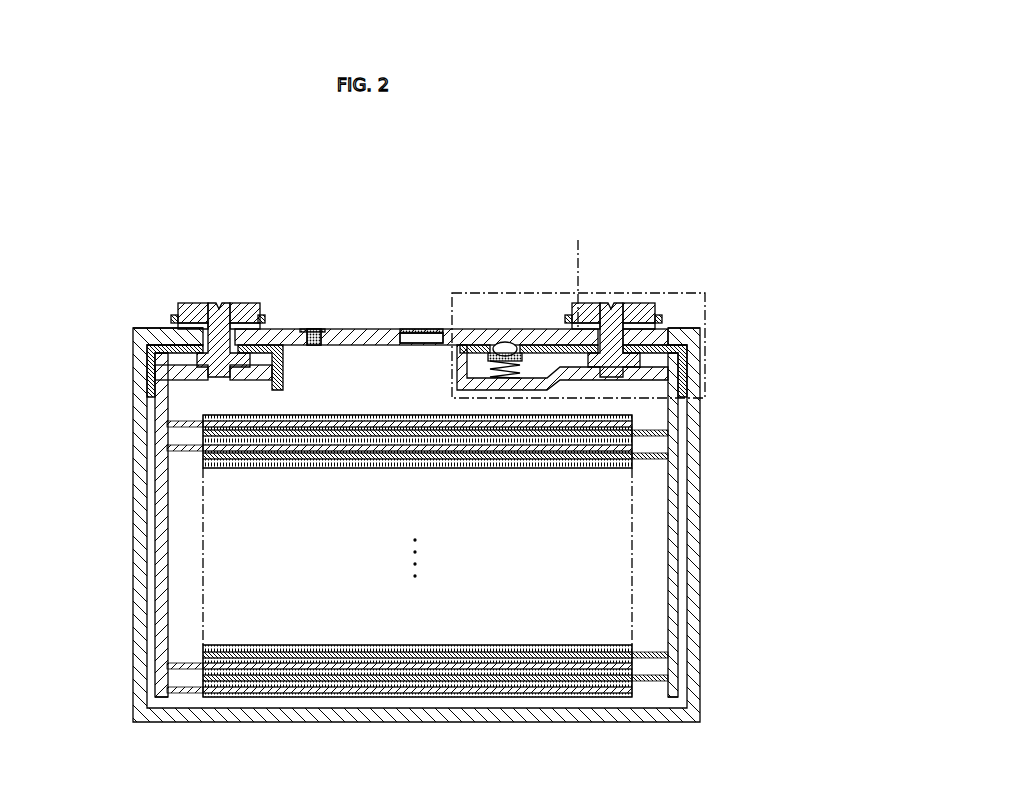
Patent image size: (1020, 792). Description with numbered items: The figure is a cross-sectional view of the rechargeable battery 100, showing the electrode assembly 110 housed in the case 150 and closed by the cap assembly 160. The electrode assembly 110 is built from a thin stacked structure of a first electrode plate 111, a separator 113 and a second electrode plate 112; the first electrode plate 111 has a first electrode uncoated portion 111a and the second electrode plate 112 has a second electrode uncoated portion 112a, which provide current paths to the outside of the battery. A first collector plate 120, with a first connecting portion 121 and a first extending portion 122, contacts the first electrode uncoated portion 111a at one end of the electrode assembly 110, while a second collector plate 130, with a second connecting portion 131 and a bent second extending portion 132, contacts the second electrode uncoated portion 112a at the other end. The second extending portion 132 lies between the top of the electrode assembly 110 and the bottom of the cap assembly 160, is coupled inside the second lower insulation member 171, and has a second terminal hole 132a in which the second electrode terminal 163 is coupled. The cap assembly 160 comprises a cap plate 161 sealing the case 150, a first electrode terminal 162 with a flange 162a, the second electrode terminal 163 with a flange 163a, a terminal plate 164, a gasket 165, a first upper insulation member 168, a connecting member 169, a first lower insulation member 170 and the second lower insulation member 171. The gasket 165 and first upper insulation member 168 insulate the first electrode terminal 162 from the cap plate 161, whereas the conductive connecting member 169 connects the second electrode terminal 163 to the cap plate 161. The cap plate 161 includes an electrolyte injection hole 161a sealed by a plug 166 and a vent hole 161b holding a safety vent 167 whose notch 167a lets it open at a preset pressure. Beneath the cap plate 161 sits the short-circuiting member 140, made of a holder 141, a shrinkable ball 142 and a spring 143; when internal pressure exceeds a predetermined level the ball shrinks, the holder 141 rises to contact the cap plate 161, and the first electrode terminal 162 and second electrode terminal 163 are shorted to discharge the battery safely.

The rechargeable battery 100 is at (678, 192).
The electrode assembly 110 is at (497, 702).
The first electrode plate 111 is at (560, 697).
The first electrode uncoated portion 111a is at (651, 681).
The second electrode plate 112 is at (300, 697).
The second electrode uncoated portion 112a is at (185, 693).
The separator 113 is at (430, 658).
The first collector plate 120 is at (750, 358).
The first connecting portion 121 is at (673, 406).
The first extending portion 122 is at (684, 372).
The second collector plate 130 is at (80, 356).
The second connecting portion 131 is at (160, 406).
The second extending portion 132 is at (150, 352).
The second terminal hole 132a is at (225, 378).
The short-circuiting member 140 is at (443, 240).
The holder 141 is at (498, 342).
The shrinkable ball 142 is at (511, 353).
The spring 143 is at (480, 360).
The case 150 is at (700, 480).
The cap assembly 160 is at (410, 240).
The cap plate 161 is at (362, 329).
The electrolyte injection hole 161a is at (316, 346).
The vent hole 161b is at (417, 344).
The first electrode terminal 162 is at (614, 303).
The flange 162a is at (665, 340).
The second electrode terminal 163 is at (215, 303).
The flange 163a is at (175, 315).
The terminal plate 164 is at (243, 303).
The gasket 165 is at (248, 330).
The plug 166 is at (313, 329).
The safety vent 167 is at (440, 333).
The notch 167a is at (410, 329).
The first upper insulation member 168 is at (568, 315).
The connecting member 169 is at (263, 315).
The first lower insulation member 170 is at (702, 336).
The second lower insulation member 171 is at (150, 337).